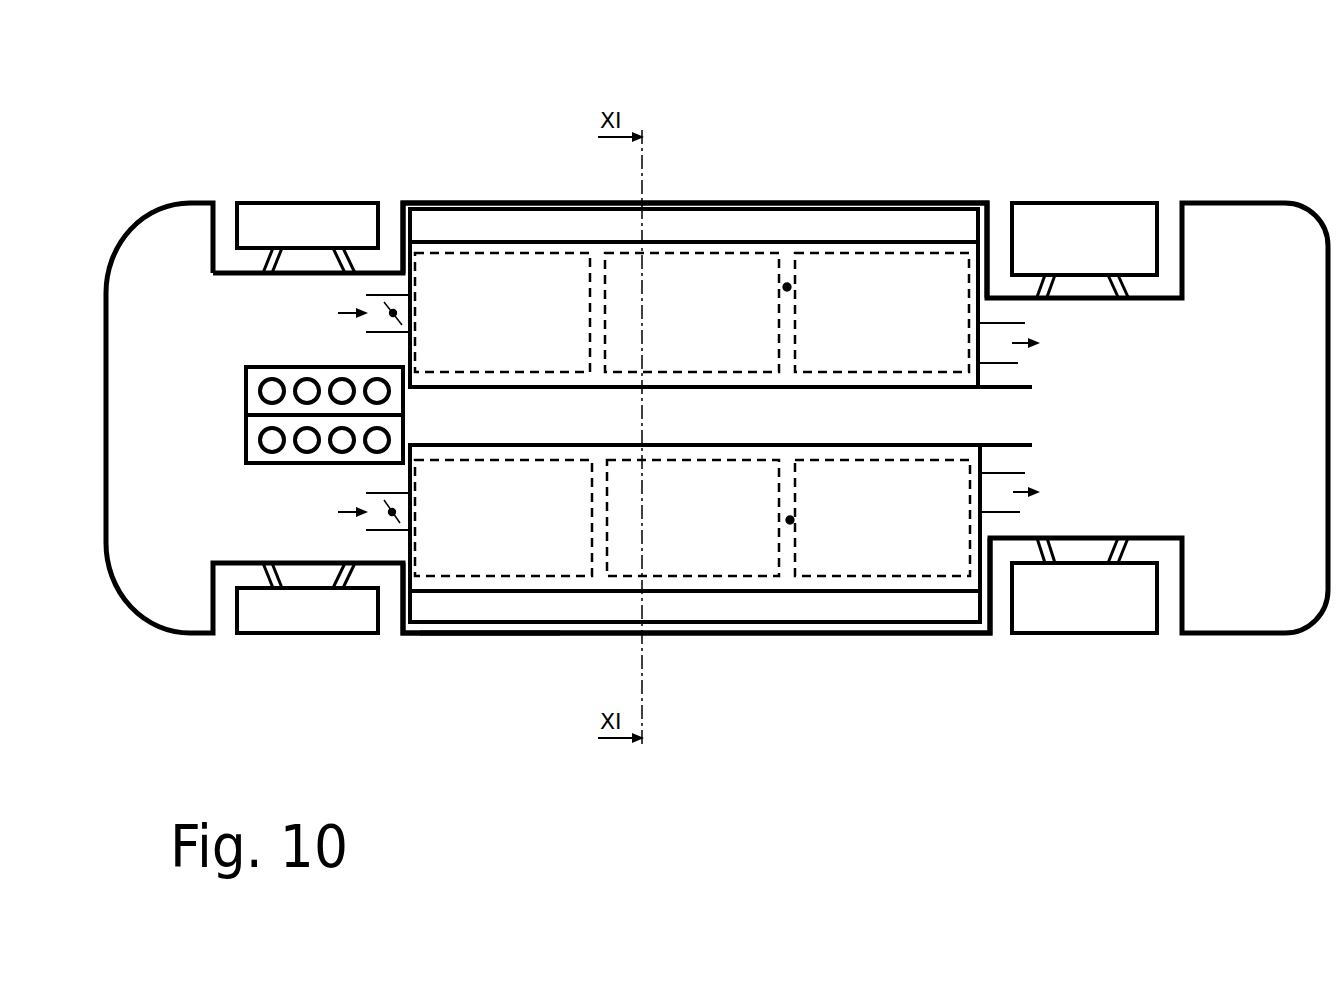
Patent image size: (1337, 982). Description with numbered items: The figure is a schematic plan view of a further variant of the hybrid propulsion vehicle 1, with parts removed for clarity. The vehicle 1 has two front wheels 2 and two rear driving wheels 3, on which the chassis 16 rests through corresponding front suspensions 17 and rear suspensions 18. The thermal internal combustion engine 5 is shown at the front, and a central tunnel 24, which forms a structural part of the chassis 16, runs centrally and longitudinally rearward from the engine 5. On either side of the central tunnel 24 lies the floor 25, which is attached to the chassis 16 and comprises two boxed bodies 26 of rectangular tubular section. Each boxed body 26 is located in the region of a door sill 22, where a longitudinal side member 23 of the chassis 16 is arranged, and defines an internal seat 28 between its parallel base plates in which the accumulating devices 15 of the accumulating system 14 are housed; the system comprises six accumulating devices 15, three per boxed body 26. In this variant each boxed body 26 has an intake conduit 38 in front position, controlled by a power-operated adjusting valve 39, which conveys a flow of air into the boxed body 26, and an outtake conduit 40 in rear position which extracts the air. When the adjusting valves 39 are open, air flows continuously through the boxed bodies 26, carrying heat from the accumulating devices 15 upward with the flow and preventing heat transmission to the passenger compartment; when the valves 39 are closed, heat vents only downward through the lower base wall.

The hybrid propulsion vehicle 1 is at (1160, 802).
The front wheels 2 is at (283, 230).
The rear driving wheels 3 is at (1095, 232).
The thermal internal combustion engine 5 is at (250, 395).
The accumulating system 14 is at (673, 115).
The accumulating devices 15 is at (692, 414).
The chassis 16 is at (1273, 232).
The front suspensions 17 is at (263, 273).
The rear suspensions 18 is at (1122, 297).
The door sill 22 is at (812, 180).
The longitudinal side member 23 is at (925, 208).
The central tunnel 24 is at (1008, 390).
The floor 25 is at (487, 724).
The boxed bodies 26 is at (978, 306).
The internal seat 28 is at (787, 287).
The intake conduit 38 is at (366, 332).
The power-operated adjusting valve 39 is at (393, 313).
The outtake conduit 40 is at (1018, 363).